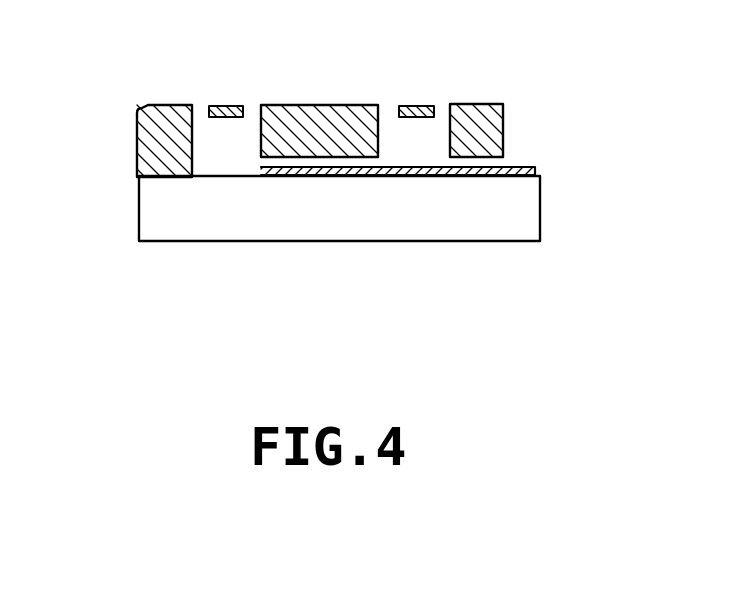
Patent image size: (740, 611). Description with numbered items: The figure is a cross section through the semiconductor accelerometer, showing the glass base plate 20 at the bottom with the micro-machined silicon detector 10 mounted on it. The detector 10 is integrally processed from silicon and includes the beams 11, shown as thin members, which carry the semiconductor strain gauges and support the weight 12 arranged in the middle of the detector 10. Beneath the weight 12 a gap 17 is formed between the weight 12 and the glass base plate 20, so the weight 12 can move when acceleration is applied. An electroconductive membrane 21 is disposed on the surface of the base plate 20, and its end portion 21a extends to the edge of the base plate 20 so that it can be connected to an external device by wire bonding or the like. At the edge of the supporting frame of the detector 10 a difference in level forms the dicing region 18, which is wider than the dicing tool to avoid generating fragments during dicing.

The silicon detector 10 is at (150, 141).
The beams 11 is at (226, 105).
The weight 12 is at (316, 105).
The gap 17 is at (360, 160).
The dicing region 18 is at (141, 108).
The base plate 20 is at (150, 203).
The electroconductive membrane 21 is at (400, 170).
The end portion 21a is at (520, 167).